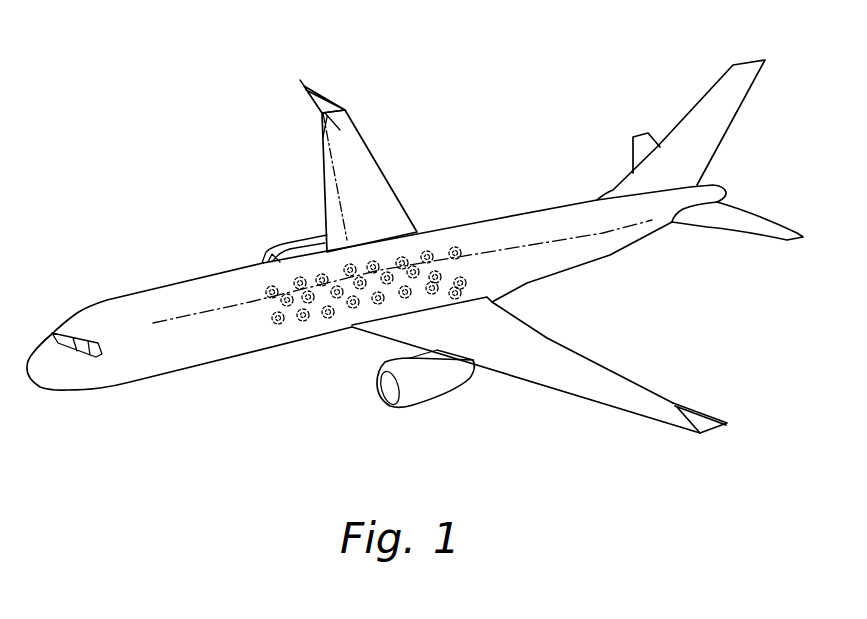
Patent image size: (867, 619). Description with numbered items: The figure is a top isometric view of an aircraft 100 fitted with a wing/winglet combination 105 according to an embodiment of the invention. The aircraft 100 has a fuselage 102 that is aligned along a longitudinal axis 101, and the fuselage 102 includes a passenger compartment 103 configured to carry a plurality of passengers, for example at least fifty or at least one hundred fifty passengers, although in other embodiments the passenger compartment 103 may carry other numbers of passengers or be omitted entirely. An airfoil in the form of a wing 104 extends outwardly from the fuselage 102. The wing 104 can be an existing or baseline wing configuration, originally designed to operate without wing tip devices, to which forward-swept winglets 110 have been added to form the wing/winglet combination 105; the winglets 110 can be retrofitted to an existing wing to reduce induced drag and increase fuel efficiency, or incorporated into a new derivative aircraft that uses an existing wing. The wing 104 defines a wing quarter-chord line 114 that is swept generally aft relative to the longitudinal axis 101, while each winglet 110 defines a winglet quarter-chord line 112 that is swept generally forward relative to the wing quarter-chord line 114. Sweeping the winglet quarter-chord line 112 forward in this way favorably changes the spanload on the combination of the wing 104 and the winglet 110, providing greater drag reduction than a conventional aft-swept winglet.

The aircraft 100 is at (163, 104).
The longitudinal axis 101 is at (183, 318).
The fuselage 102 is at (120, 296).
The passenger compartment 103 is at (336, 305).
The wing 104 is at (390, 187).
The wing/winglet combination 105 is at (340, 91).
The forward-swept winglet 110 is at (320, 108).
The winglet quarter-chord line 112 is at (328, 93).
The wing quarter-chord line 114 is at (337, 168).